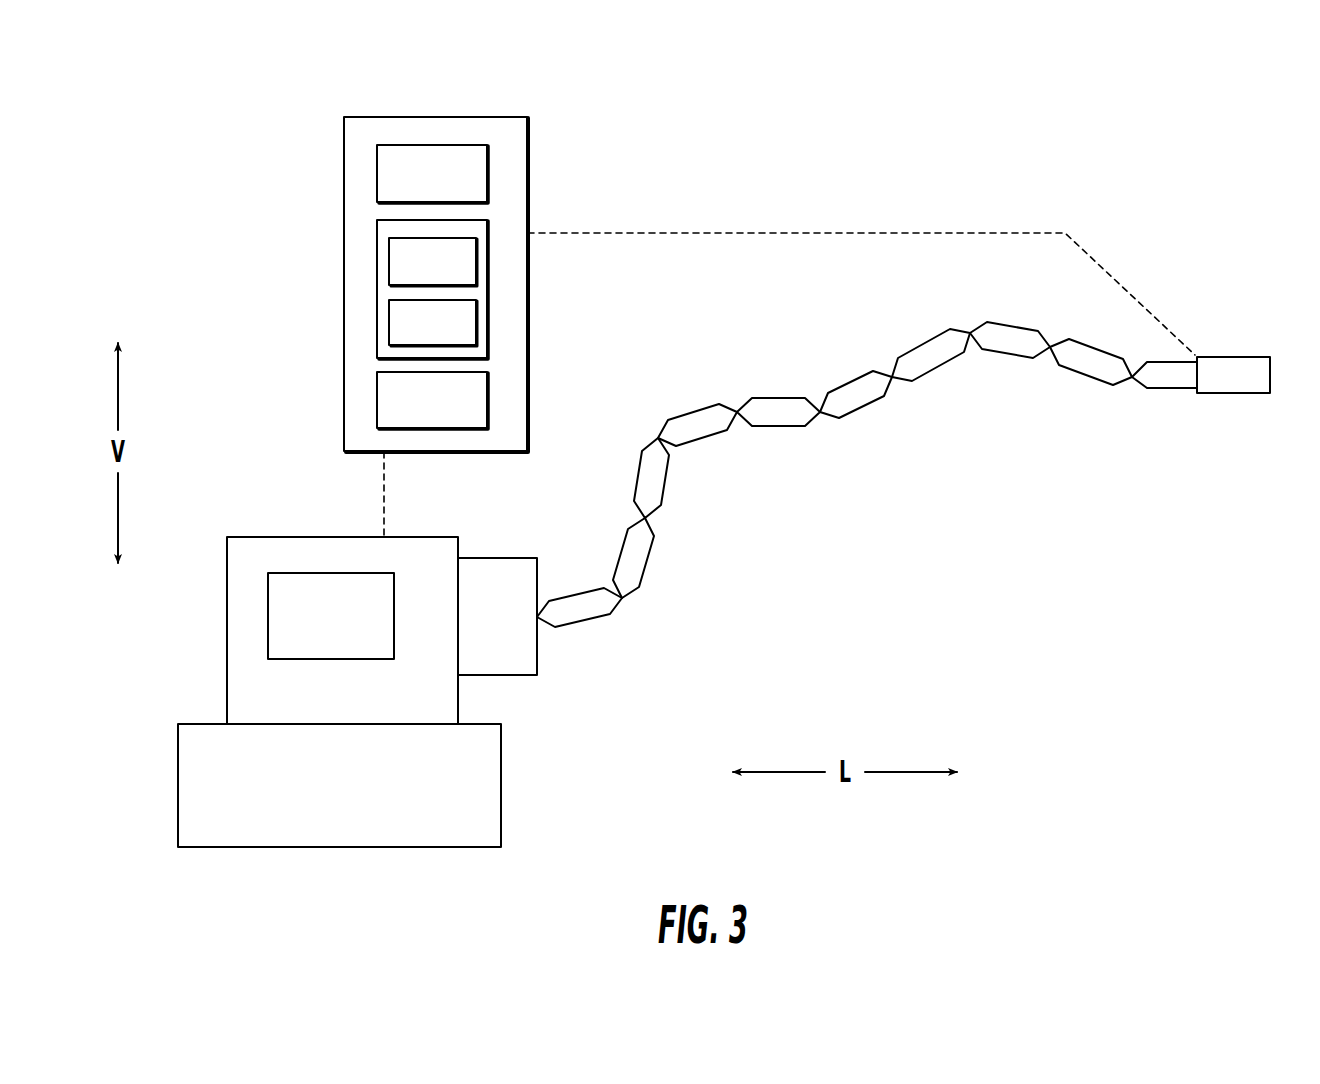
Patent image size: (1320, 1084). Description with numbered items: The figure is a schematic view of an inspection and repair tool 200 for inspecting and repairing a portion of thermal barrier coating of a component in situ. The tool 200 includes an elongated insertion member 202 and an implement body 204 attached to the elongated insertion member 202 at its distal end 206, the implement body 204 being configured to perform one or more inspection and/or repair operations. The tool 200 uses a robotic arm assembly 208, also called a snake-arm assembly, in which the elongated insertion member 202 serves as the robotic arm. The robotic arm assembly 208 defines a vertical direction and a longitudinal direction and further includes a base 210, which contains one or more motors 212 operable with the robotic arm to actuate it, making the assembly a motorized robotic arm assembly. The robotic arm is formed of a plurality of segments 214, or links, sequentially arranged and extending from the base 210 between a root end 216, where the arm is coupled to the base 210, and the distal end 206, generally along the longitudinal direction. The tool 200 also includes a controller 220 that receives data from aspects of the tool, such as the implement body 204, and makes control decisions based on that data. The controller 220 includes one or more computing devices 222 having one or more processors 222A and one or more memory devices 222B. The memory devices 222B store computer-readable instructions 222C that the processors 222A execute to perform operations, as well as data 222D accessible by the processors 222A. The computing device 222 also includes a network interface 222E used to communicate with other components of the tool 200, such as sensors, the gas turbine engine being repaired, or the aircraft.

The inspection and repair tool 200 is at (903, 160).
The elongated insertion member 202 is at (872, 474).
The implement body 204 is at (1238, 356).
The distal end 206 is at (1208, 410).
The robotic arm assembly 208 is at (735, 207).
The base 210 is at (257, 530).
The motors 212 is at (302, 622).
The segments 214 is at (700, 408).
The root end 216 is at (558, 580).
The controller 220 is at (358, 95).
The computing device 222 is at (433, 117).
The processor 222A is at (408, 187).
The memory device 222B is at (376, 235).
The computer-readable instructions 222C is at (389, 263).
The data 222D is at (389, 325).
The network interface 222E is at (408, 413).